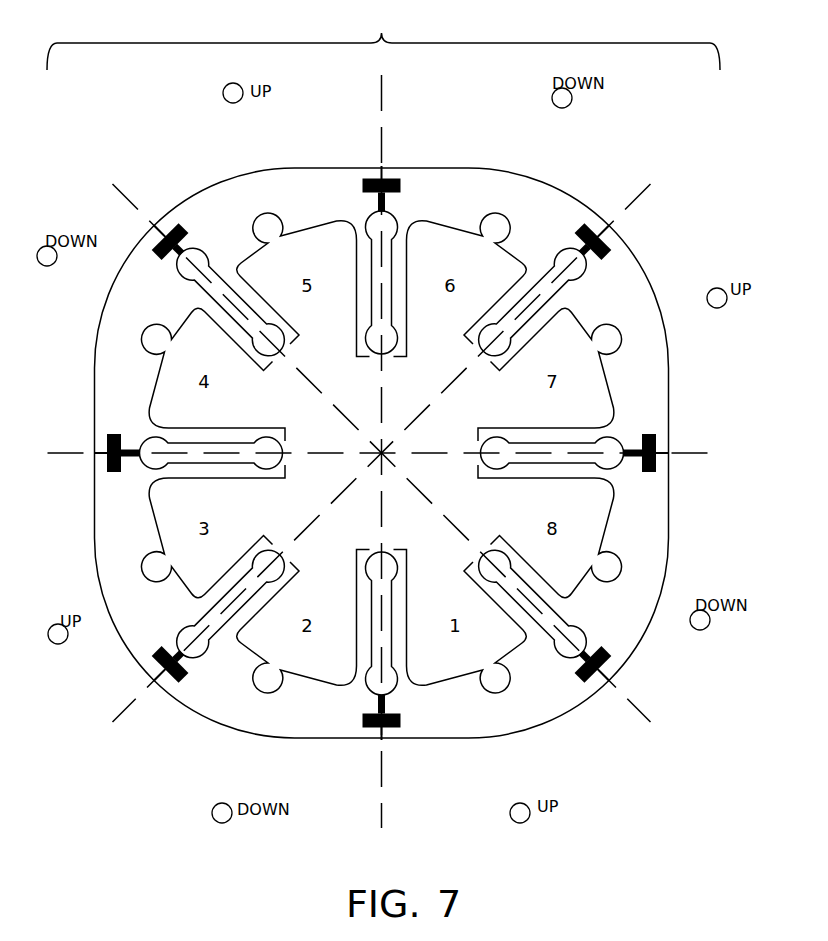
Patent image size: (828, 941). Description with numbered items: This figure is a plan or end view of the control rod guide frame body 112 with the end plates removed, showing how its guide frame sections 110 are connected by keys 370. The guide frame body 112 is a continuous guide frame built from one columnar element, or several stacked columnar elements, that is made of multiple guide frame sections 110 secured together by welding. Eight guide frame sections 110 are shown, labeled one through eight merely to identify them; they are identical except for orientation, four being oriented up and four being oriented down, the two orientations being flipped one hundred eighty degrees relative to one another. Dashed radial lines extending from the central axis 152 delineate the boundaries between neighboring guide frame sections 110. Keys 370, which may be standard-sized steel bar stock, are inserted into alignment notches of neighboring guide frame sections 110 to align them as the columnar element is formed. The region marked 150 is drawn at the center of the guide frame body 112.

The guide frame body 112 is at (383, 37).
The guide frame section 110 is at (248, 197).
The central hub 150 is at (372, 406).
The central axis 152 is at (382, 453).
The key 370 is at (160, 228).